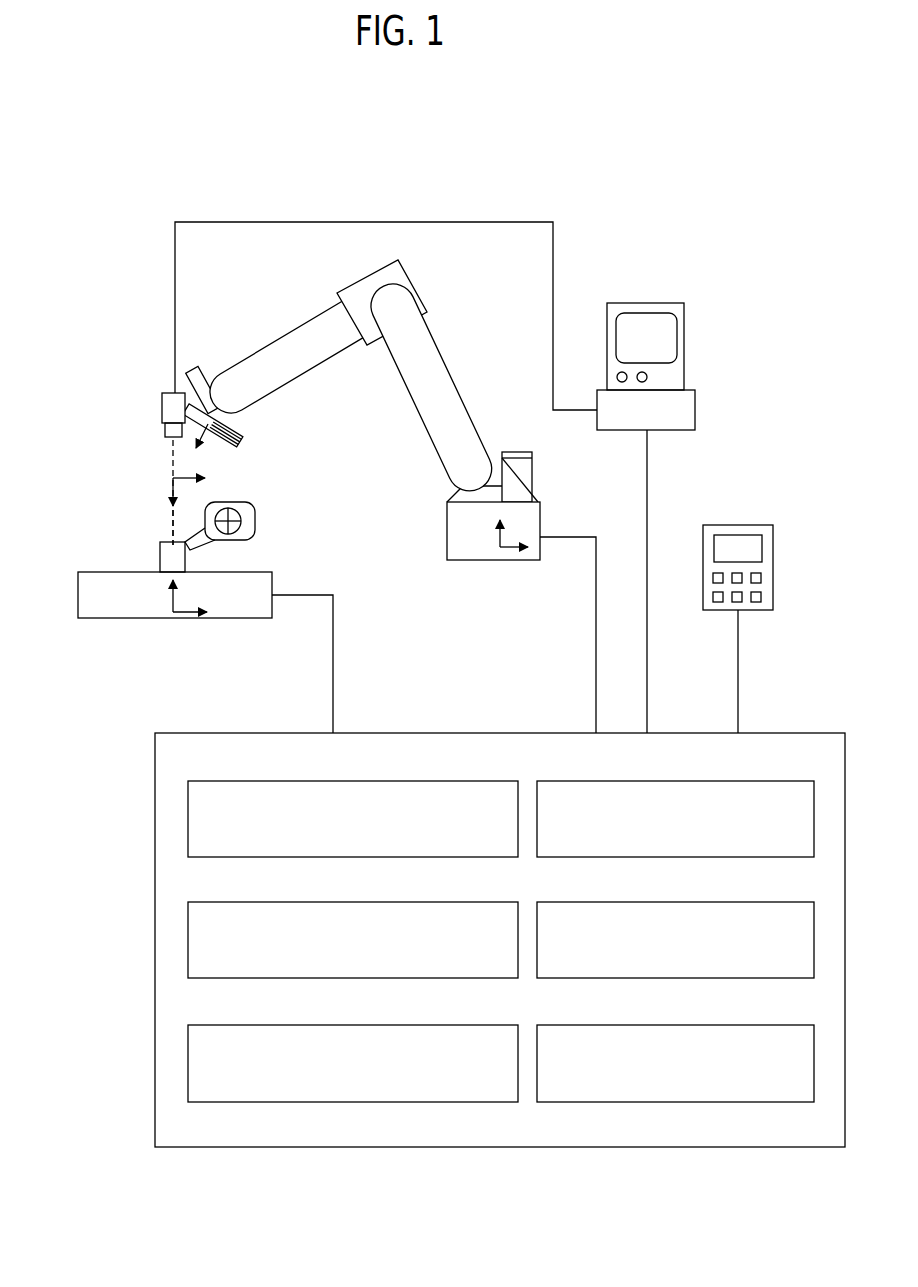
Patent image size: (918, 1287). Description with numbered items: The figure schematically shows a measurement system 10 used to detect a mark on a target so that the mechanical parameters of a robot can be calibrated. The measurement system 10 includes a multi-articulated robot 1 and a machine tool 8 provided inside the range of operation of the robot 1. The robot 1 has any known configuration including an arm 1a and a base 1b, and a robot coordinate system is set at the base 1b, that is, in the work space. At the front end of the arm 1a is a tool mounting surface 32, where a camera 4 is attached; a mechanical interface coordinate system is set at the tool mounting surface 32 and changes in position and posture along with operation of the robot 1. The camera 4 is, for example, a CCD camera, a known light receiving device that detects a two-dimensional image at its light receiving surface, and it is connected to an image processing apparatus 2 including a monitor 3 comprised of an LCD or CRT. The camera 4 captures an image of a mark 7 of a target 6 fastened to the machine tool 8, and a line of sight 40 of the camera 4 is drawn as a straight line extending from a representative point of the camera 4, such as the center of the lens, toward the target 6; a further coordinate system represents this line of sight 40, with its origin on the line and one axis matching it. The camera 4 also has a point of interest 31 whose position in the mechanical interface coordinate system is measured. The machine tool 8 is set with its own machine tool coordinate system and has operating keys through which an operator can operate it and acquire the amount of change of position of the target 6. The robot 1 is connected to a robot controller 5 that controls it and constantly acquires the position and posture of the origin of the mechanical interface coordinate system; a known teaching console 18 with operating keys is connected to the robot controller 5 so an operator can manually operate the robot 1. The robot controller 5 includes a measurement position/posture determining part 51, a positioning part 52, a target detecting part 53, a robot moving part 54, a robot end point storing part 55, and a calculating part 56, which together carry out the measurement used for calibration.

The measurement system 10 is at (70, 219).
The multi-articulated robot 1 is at (458, 336).
The arm 1a is at (304, 372).
The base 1b is at (543, 520).
The image processing apparatus 2 is at (687, 325).
The monitor 3 is at (660, 313).
The camera 4 is at (160, 397).
The robot controller 5 is at (200, 733).
The target 6 is at (160, 565).
The mark 7 is at (250, 506).
The machine tool 8 is at (262, 572).
The teaching console 18 is at (768, 525).
The point of interest 31 is at (173, 478).
The tool mounting surface 32 is at (194, 402).
The line of sight 40 is at (160, 520).
The measurement position/posture determining part 51 is at (452, 779).
The positioning part 52 is at (452, 901).
The target detecting part 53 is at (452, 1024).
The robot moving part 54 is at (741, 779).
The robot end point storing part 55 is at (741, 901).
The calculating part 56 is at (741, 1024).